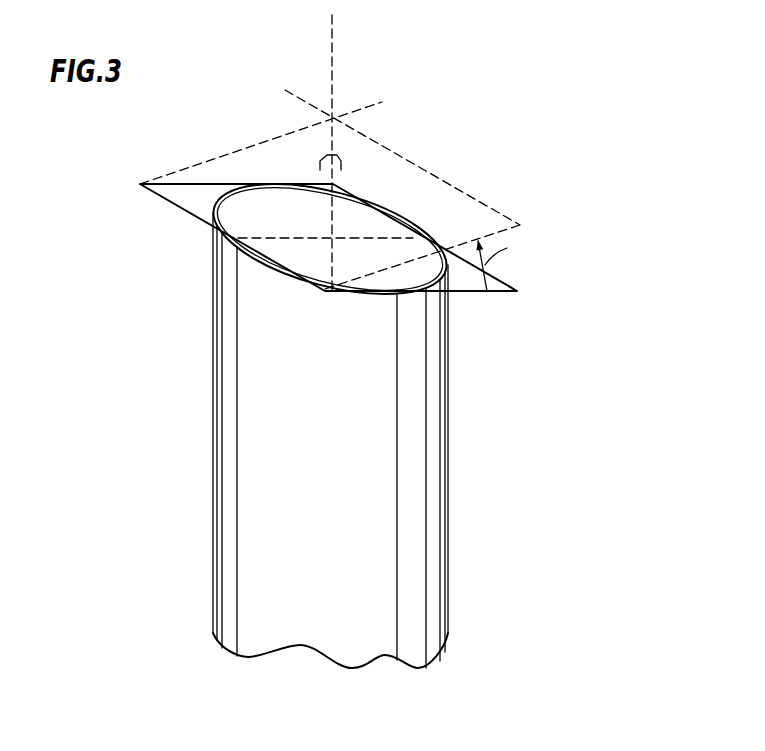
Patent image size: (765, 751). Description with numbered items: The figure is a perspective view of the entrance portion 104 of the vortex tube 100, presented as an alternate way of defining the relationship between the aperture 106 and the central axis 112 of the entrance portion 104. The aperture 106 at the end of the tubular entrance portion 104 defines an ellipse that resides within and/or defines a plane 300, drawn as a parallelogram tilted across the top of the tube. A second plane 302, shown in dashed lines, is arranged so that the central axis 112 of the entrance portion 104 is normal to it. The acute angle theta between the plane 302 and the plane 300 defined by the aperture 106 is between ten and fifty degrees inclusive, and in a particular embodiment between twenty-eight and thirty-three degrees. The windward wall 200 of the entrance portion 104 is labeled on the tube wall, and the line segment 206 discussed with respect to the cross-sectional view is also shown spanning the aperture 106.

The vortex tube 100 is at (538, 114).
The entrance portion 104 is at (180, 263).
The aperture 106 is at (440, 275).
The central axis 112 is at (332, 63).
The windward wall 200 is at (298, 316).
The line segment 206 is at (364, 238).
The plane 300 is at (503, 280).
The plane 302 is at (451, 196).